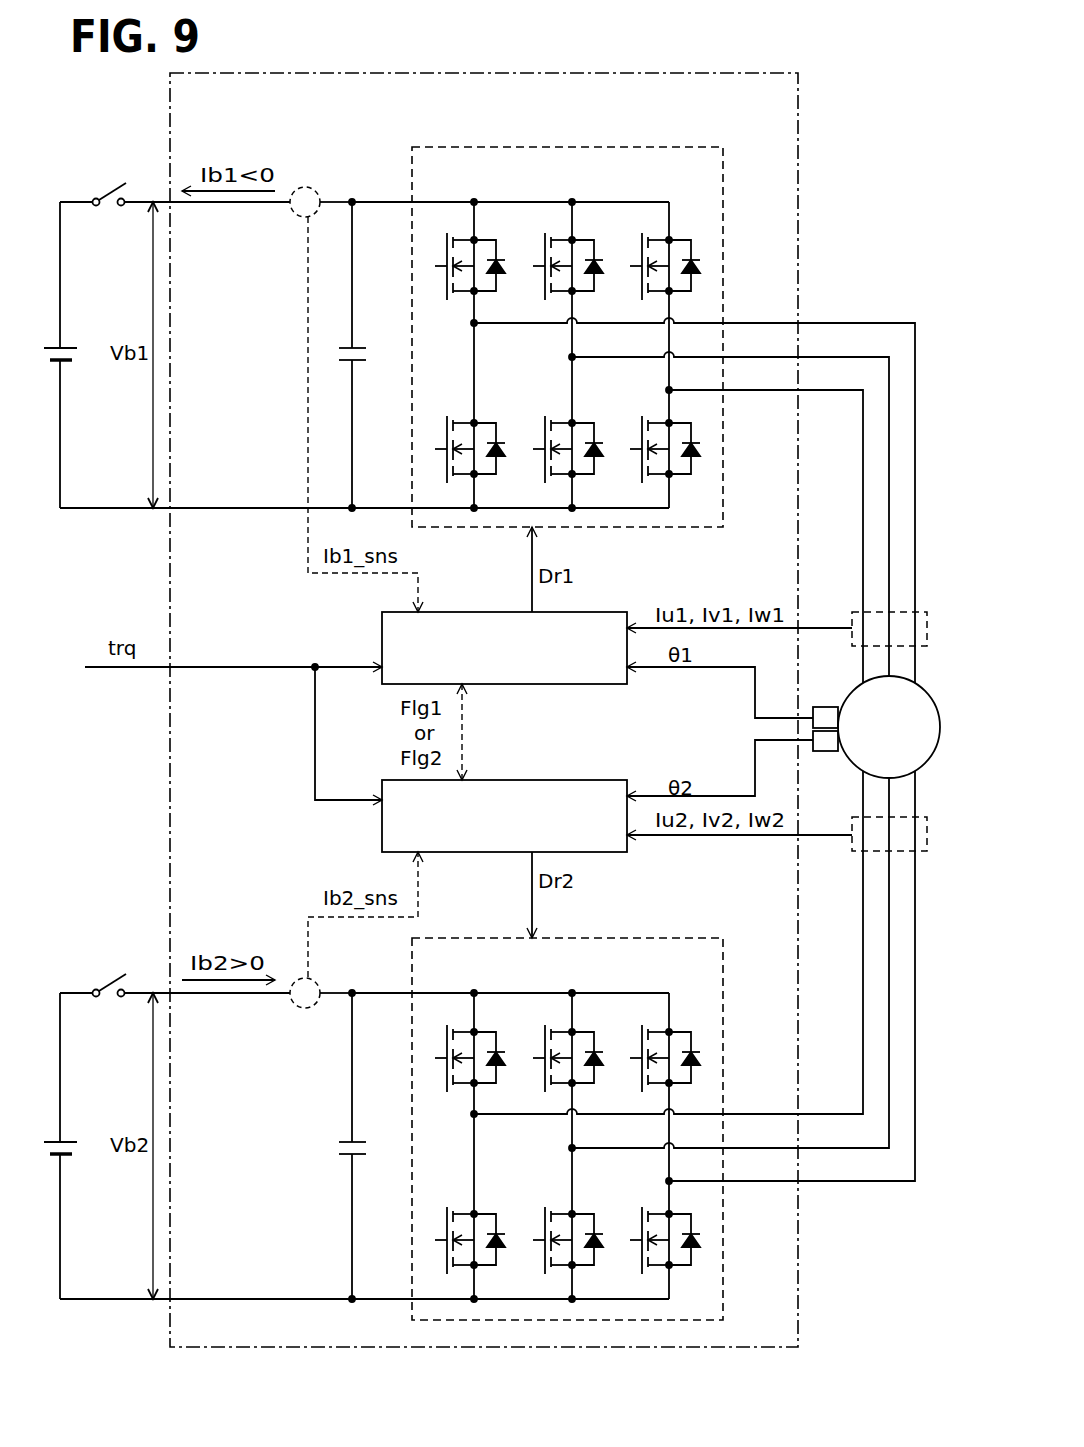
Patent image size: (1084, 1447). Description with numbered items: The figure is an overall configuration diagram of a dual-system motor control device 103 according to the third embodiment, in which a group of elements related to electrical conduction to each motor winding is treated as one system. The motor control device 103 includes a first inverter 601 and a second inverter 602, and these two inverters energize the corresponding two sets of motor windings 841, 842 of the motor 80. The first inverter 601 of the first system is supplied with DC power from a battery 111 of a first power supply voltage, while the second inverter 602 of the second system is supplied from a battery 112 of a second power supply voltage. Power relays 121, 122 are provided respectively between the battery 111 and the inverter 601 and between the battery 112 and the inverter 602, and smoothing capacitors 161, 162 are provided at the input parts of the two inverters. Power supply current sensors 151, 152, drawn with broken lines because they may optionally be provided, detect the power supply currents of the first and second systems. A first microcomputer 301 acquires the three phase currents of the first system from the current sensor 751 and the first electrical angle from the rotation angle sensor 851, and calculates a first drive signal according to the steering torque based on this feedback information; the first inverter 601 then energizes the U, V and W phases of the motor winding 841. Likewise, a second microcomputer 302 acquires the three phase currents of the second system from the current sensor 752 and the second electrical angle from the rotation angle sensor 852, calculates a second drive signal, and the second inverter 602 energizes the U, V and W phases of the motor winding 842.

The motor control device 103 is at (641, 72).
The first inverter 601 is at (613, 147).
The second inverter 602 is at (613, 938).
The power relay 121 is at (104, 190).
The power relay 122 is at (104, 981).
The battery 111 is at (68, 343).
The battery 112 is at (68, 1137).
The power supply current sensor 151 is at (306, 186).
The power supply current sensor 152 is at (305, 1009).
The smoothing capacitor 161 is at (360, 343).
The smoothing capacitor 162 is at (360, 1137).
The first microcomputer 301 is at (382, 633).
The second microcomputer 302 is at (382, 838).
The current sensor 751 is at (927, 612).
The current sensor 752 is at (927, 851).
The rotation angle sensor 851 is at (820, 705).
The rotation angle sensor 852 is at (820, 752).
The motor 80 is at (932, 757).
The motor winding 841 is at (851, 312).
The motor winding 842 is at (852, 1194).